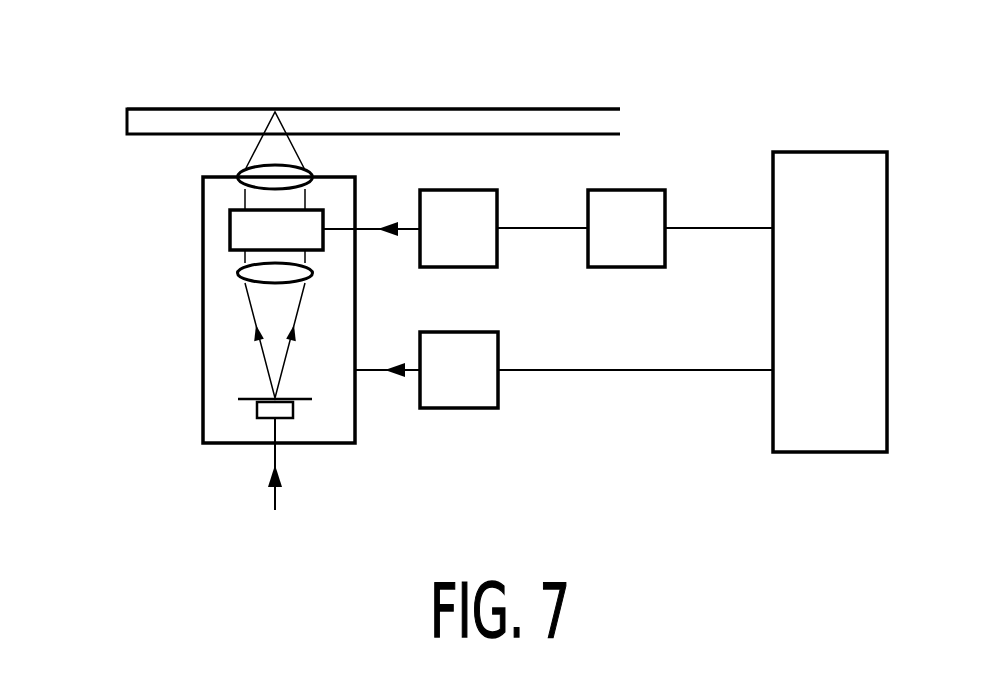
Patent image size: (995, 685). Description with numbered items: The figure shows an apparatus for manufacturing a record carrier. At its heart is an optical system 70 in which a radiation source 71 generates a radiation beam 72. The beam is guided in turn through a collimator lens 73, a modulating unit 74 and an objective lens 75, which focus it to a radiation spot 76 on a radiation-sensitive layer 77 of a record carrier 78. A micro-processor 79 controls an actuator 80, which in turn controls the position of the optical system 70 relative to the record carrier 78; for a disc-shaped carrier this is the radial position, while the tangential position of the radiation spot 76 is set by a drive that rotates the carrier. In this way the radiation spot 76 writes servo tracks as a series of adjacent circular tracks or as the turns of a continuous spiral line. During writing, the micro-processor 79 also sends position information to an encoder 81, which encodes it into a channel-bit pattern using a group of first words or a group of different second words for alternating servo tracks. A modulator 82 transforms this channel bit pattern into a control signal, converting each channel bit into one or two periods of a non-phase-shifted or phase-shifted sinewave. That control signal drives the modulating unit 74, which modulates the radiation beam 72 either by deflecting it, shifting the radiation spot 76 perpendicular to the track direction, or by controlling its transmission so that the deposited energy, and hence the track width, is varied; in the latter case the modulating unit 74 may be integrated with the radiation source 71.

The optical system 70 is at (203, 317).
The radiation source 71 is at (257, 410).
The radiation beam 72 is at (262, 362).
The collimator lens 73 is at (238, 273).
The modulating unit 74 is at (230, 229).
The objective lens 75 is at (203, 181).
The radiation spot 76 is at (275, 112).
The radiation-sensitive layer 77 is at (166, 110).
The record carrier 78 is at (127, 126).
The micro-processor 79 is at (852, 162).
The actuator 80 is at (485, 345).
The encoder 81 is at (630, 200).
The modulator 82 is at (462, 201).